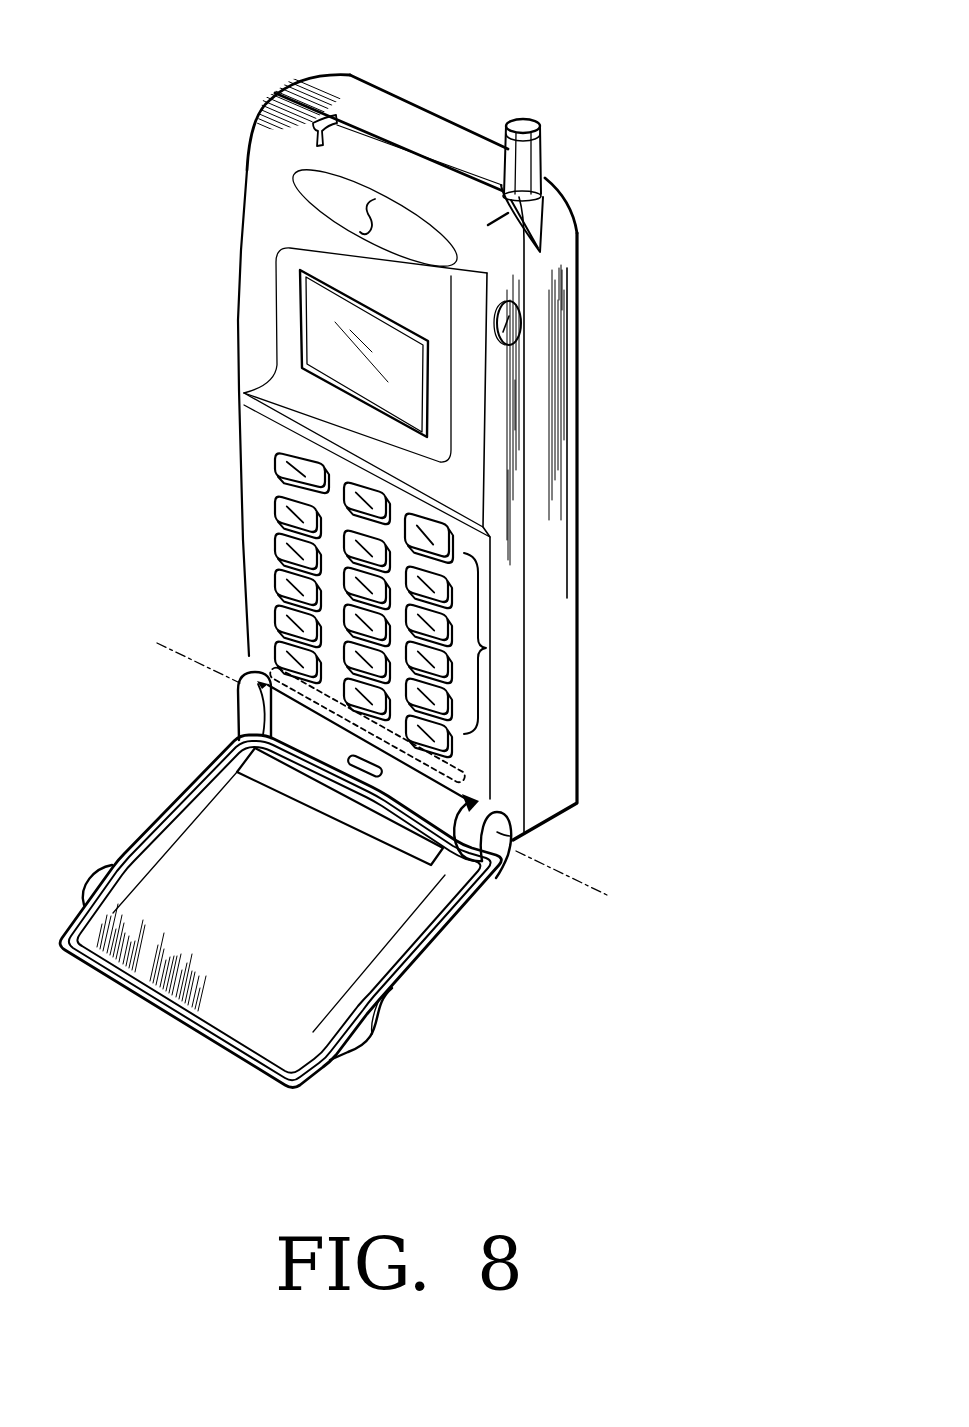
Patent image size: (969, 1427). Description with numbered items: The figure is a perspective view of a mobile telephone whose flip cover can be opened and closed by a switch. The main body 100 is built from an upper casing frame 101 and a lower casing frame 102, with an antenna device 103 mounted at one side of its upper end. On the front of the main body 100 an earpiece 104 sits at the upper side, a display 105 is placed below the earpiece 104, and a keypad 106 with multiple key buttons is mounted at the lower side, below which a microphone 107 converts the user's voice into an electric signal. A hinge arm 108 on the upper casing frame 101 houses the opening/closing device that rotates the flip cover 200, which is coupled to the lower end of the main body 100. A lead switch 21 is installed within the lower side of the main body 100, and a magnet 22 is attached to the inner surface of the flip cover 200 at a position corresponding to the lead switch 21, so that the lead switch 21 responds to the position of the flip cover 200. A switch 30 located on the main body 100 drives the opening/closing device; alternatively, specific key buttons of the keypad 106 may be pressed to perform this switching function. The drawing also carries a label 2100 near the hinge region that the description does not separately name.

The main body 100 is at (587, 541).
The upper casing frame 101 is at (362, 128).
The lower casing frame 102 is at (437, 138).
The antenna device 103 is at (546, 199).
The earpiece 104 is at (487, 273).
The display 105 is at (410, 382).
The switch 30 is at (522, 313).
The keypad 106 is at (488, 648).
The microphone 107 is at (358, 762).
The hinge arm 108 is at (288, 713).
The flip cover 200 is at (153, 917).
The lead switch 21 is at (253, 672).
The magnet 22 is at (440, 865).
The hinge axis 2100 is at (500, 847).